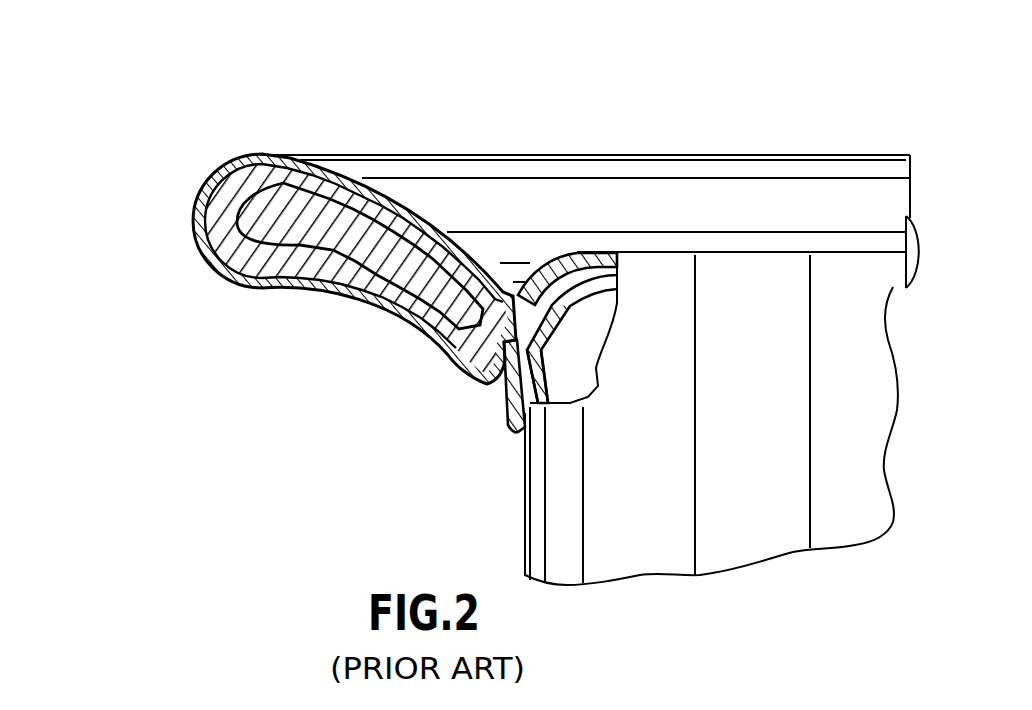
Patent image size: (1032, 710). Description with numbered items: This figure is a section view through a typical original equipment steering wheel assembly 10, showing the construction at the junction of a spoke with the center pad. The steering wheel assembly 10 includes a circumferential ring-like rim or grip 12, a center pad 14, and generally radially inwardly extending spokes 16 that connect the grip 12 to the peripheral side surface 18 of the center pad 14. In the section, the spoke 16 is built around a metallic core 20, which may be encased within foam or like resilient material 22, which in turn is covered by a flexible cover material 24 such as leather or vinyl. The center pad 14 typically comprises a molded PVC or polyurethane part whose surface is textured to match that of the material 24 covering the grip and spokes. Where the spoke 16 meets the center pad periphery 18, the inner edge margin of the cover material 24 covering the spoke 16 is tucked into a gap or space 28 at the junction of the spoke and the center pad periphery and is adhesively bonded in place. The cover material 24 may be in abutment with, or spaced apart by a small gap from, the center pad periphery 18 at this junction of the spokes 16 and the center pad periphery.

The steering wheel assembly 10 is at (656, 104).
The grip 12 is at (180, 244).
The center pad 14 is at (568, 252).
The spokes 16 is at (414, 185).
The peripheral side surface 18 is at (532, 406).
The core 20 is at (238, 285).
The resilient material 22 is at (291, 281).
The cover material 24 is at (450, 237).
The gap 28 is at (502, 382).